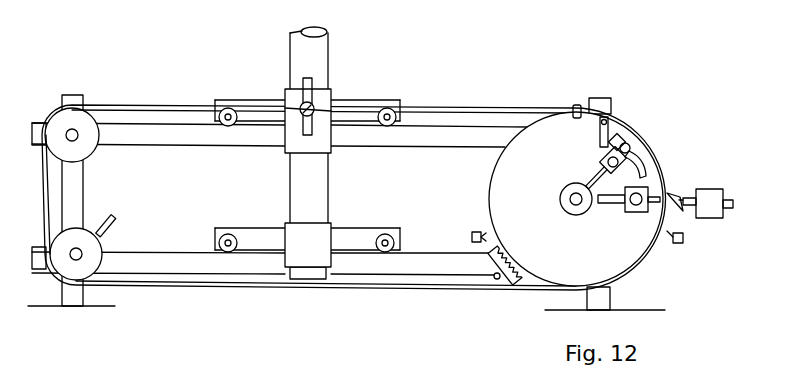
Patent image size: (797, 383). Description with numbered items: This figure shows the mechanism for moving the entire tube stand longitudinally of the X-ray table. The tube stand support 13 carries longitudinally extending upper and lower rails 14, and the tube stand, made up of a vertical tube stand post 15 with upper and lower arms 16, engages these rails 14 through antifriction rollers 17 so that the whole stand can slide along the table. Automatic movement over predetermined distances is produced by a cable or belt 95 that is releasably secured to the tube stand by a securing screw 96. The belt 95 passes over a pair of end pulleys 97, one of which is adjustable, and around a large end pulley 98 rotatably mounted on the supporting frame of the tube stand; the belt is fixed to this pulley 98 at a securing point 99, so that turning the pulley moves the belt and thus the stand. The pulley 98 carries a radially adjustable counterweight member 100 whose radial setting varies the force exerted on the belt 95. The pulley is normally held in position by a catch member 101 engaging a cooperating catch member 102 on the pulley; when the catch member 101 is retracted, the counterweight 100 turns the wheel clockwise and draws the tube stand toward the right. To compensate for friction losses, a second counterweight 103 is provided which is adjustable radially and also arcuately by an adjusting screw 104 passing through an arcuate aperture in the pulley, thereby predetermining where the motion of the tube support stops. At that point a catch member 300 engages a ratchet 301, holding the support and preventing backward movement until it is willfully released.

The tube stand support 13 is at (78, 187).
The upper and lower rails 14 is at (173, 140).
The tube stand post 15 is at (297, 63).
The upper and lower arms 16 is at (285, 96).
The antifriction rollers 17 is at (234, 124).
The cable or belt 95 is at (470, 108).
The securing screw 96 is at (326, 102).
The end pulleys 97 is at (60, 116).
The large end pulley 98 is at (496, 168).
The belt securing point 99 is at (575, 105).
The radially adjustable counterweight member 100 is at (640, 212).
The catch member 101 is at (706, 186).
The cooperating catch member 102 is at (672, 195).
The second counterweight 103 is at (600, 150).
The adjusting screw 104 is at (627, 143).
The catch member 300 is at (609, 132).
The ratchet 301 is at (503, 262).